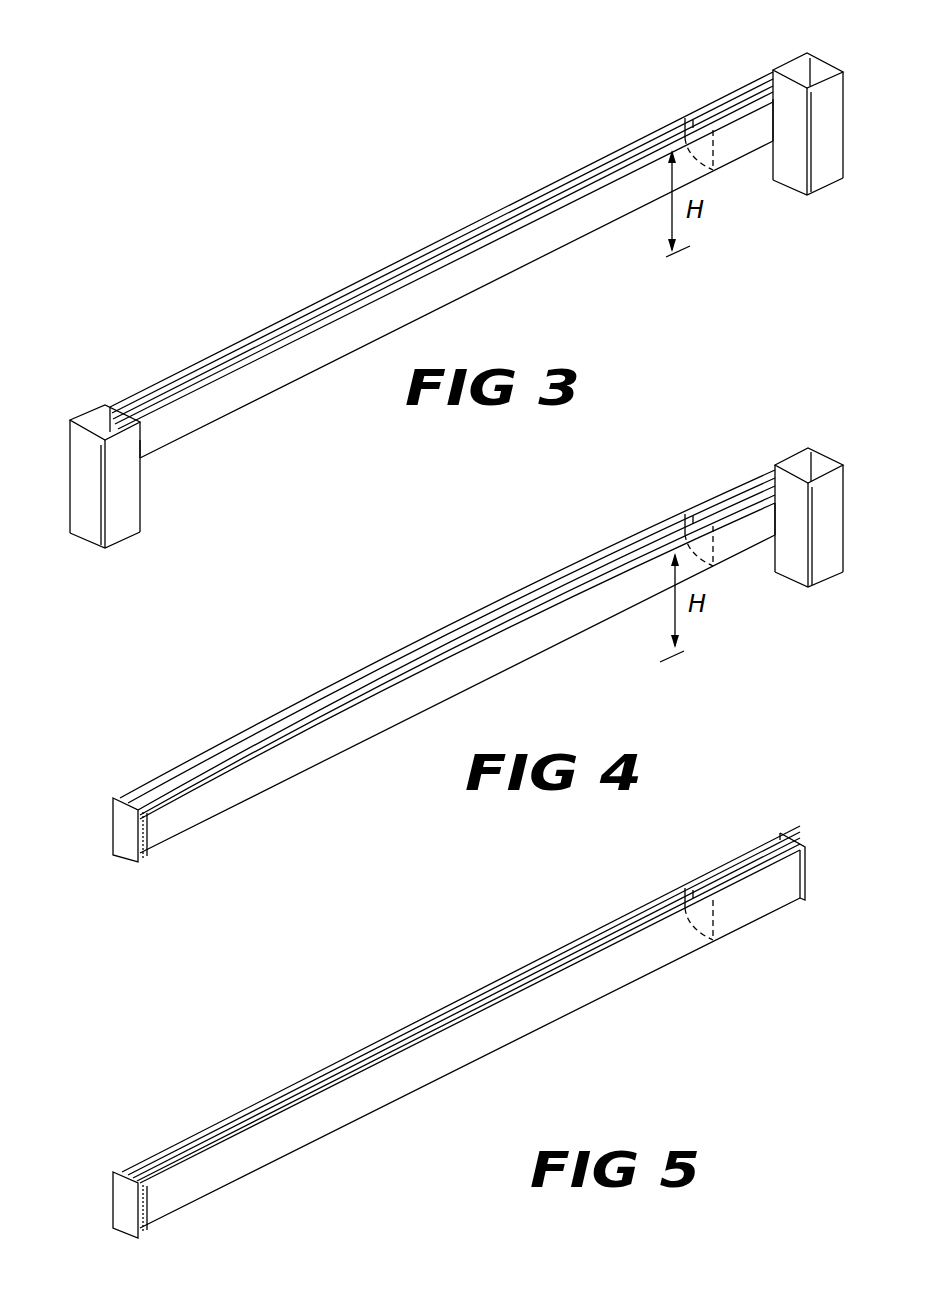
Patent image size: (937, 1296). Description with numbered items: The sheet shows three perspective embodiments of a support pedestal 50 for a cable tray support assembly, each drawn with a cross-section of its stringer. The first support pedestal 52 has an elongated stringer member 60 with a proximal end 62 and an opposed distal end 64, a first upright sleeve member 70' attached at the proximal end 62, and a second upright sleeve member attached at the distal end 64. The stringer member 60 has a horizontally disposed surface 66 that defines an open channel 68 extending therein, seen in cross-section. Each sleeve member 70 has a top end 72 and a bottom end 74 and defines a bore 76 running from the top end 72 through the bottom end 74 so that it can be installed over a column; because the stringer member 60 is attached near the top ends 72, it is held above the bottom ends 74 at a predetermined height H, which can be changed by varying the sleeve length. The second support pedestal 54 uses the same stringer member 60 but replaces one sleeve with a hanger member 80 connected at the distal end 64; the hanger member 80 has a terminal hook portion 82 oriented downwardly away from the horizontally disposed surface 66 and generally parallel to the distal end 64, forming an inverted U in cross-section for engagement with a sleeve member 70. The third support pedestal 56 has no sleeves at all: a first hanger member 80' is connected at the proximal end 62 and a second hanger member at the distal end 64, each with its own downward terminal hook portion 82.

In FIG. 3, the support pedestal 50 is at (273, 377).
In FIG. 4, the support pedestal 50 is at (345, 735).
In FIG. 5, the support pedestal 50 is at (468, 1048).
In FIG. 3, the first support pedestal 52 is at (456, 285).
In FIG. 4, the second support pedestal 54 is at (432, 683).
In FIG. 5, the third support pedestal 56 is at (461, 1025).
In FIG. 3, the stringer member 60 is at (295, 313).
In FIG. 4, the stringer member 60 is at (268, 778).
In FIG. 5, the stringer member 60 is at (355, 1103).
In FIG. 3, the proximal end 62 is at (142, 445).
In FIG. 4, the proximal end 62 is at (805, 513).
In FIG. 5, the proximal end 62 is at (793, 883).
In FIG. 3, the distal end 64 is at (803, 110).
In FIG. 4, the distal end 64 is at (147, 828).
In FIG. 5, the distal end 64 is at (147, 1205).
In FIG. 3, the horizontally disposed surface 66 is at (395, 275).
In FIG. 4, the horizontally disposed surface 66 is at (248, 740).
In FIG. 5, the horizontally disposed surface 66 is at (340, 1050).
In FIG. 3, the open channel 68 is at (667, 147).
In FIG. 4, the open channel 68 is at (722, 518).
In FIG. 5, the open channel 68 is at (710, 878).
In FIG. 4, the sleeve member 70 is at (828, 513).
In FIG. 3, the first sleeve member 70' is at (446, 293).
In FIG. 3, the top end 72 is at (88, 417).
In FIG. 4, the top end 72 is at (830, 448).
In FIG. 3, the bottom end 74 is at (128, 540).
In FIG. 4, the bottom end 74 is at (820, 588).
In FIG. 3, the bore 76 is at (108, 410).
In FIG. 4, the bore 76 is at (790, 460).
In FIG. 4, the hanger member 80 is at (146, 854).
In FIG. 5, the first hanger member 80' is at (827, 844).
In FIG. 4, the terminal hook portion 82 is at (125, 845).
In FIG. 5, the terminal hook portion 82 is at (120, 1218).